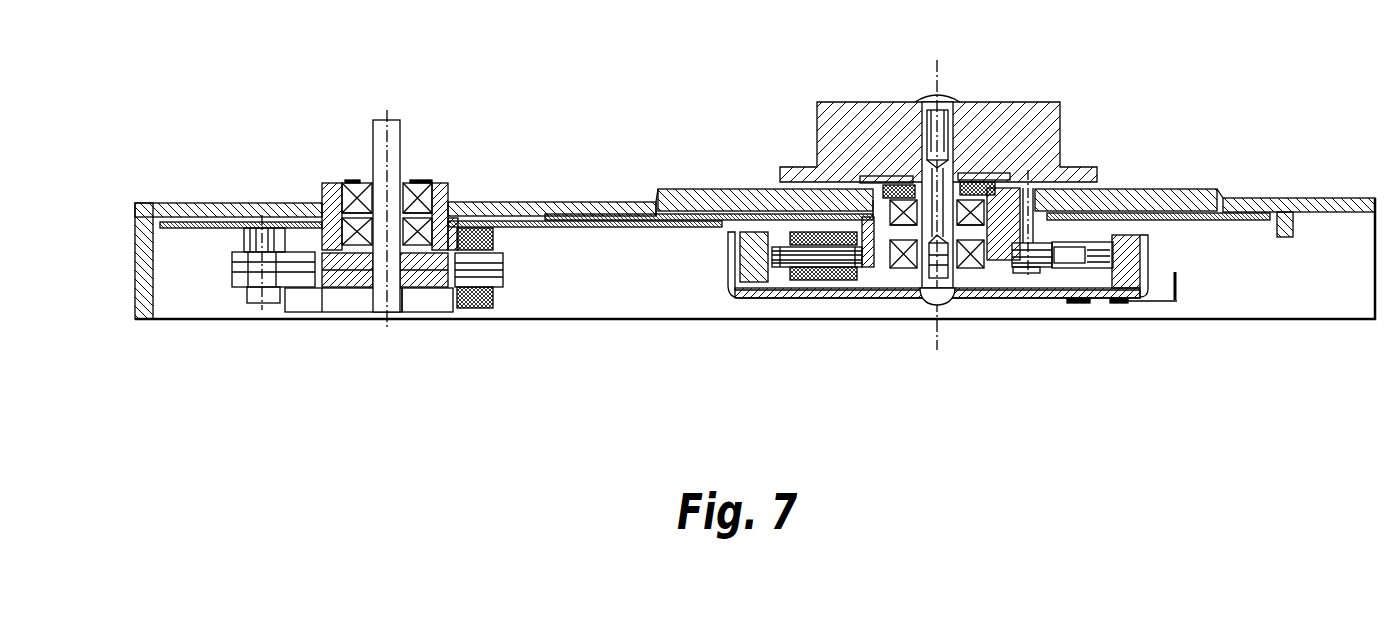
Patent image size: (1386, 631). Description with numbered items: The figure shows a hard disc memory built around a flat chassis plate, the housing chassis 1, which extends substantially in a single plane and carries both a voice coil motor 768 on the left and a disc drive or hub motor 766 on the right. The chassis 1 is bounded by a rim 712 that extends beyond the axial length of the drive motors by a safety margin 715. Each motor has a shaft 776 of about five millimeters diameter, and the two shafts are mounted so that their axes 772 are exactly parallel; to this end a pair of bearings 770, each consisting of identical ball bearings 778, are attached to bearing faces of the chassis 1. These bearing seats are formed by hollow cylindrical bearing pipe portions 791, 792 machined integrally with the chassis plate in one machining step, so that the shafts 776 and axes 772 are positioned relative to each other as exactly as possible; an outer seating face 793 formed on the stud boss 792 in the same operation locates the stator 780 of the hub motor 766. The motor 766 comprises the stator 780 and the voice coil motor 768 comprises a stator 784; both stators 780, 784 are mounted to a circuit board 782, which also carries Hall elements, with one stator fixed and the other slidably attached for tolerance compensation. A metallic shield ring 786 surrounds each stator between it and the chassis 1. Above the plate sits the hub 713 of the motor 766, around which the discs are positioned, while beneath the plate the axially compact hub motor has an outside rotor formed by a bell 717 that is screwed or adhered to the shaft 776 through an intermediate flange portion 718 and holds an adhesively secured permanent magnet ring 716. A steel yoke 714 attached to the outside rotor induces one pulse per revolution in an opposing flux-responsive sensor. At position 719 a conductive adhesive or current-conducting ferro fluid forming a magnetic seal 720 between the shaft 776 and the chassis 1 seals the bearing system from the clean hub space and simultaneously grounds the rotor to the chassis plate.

The housing chassis 1 is at (678, 197).
The rim 712 is at (135, 288).
The hub 713 is at (1047, 130).
The steel yoke 714 is at (1175, 300).
The safety margin 715 is at (437, 318).
The permanent magnet ring 716 is at (1123, 250).
The outside-rotor bell 717 is at (1110, 300).
The flange portion 718 is at (977, 280).
The position of conductive adhesive or ferro fluid 719 is at (992, 175).
The magnetic seal 720 is at (1005, 165).
The disc drive motor 766 is at (1080, 147).
The voice coil motor 768 is at (448, 163).
The bearing 770 is at (422, 153).
The axis 772 is at (387, 117).
The shaft 776 is at (378, 148).
The ball bearing 778 is at (437, 185).
The stator of disc drive motor 780 is at (787, 272).
The circuit board 782 is at (198, 230).
The stator of voice coil motor 784 is at (503, 265).
The metallic shield ring 786 is at (551, 208).
The bearing pipe portion 791 is at (292, 234).
The bearing stud boss 792 is at (887, 267).
The outer seating face 793 is at (840, 270).